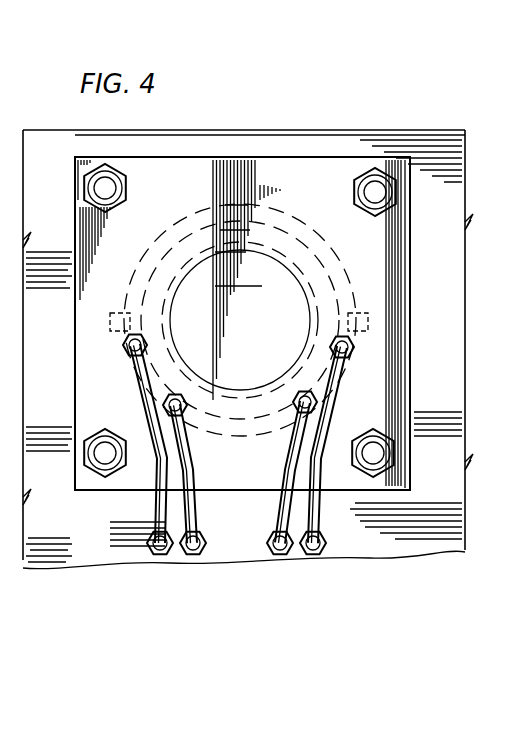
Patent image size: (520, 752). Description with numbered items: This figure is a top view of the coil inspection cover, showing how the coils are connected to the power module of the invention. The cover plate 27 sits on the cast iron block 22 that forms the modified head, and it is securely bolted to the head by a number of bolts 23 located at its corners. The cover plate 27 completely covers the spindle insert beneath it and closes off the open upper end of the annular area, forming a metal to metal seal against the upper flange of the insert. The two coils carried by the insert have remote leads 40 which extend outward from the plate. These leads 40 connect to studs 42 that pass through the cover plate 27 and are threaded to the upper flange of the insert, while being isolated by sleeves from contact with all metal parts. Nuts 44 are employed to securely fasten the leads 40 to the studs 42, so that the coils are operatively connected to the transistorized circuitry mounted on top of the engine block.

The cast iron block 22 is at (423, 140).
The cover plate 27 is at (310, 175).
The bolts 23 is at (380, 456).
The studs 42 is at (352, 345).
The nuts 44 is at (355, 356).
The remote leads 40 is at (155, 514).